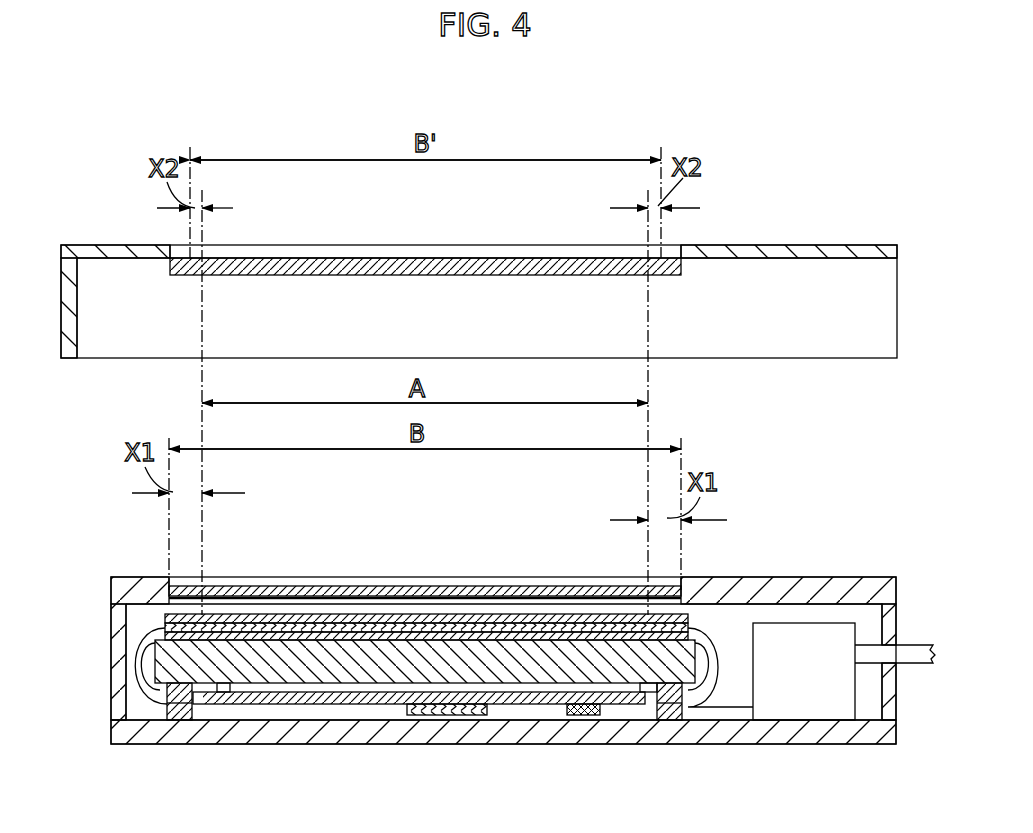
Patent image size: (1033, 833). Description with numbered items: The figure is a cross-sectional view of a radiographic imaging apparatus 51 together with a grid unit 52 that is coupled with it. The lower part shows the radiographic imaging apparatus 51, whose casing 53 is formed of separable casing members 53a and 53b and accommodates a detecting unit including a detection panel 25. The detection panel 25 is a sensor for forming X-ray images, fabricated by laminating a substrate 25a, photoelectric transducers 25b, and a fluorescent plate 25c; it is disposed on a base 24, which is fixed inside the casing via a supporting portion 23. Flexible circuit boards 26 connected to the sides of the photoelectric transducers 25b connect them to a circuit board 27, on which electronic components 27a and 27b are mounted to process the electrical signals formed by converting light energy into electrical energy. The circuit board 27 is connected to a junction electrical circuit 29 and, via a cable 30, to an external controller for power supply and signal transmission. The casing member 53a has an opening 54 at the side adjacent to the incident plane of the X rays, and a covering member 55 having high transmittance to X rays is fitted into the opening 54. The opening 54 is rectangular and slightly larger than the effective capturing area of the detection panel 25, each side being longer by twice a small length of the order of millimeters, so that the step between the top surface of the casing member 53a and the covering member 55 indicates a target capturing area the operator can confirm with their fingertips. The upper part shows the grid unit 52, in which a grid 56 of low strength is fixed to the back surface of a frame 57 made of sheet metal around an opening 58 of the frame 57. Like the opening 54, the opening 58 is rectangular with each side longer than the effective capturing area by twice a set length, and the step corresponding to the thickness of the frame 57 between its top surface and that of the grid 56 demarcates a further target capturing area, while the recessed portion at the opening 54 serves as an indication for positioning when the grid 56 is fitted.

The supporting portion 23 is at (188, 722).
The base 24 is at (374, 676).
The detection panel 25 is at (426, 562).
The substrate 25a is at (277, 525).
The photoelectric transducers 25b is at (367, 627).
The fluorescent plate 25c is at (300, 614).
The flexible circuit boards 26 is at (127, 705).
The circuit board 27 is at (419, 752).
The electronic component 27a is at (440, 715).
The electronic component 27b is at (590, 715).
The junction electrical circuit 29 is at (794, 710).
The cable 30 is at (912, 665).
The radiographic imaging apparatus 51 is at (489, 648).
The grid unit 52 is at (484, 251).
The casing 53 is at (112, 601).
The casing member 53a is at (139, 564).
The casing member 53b is at (112, 697).
The opening 54 is at (552, 584).
The covering member 55 is at (508, 594).
The grid 56 is at (380, 263).
The frame 57 is at (808, 255).
The opening 58 is at (473, 245).